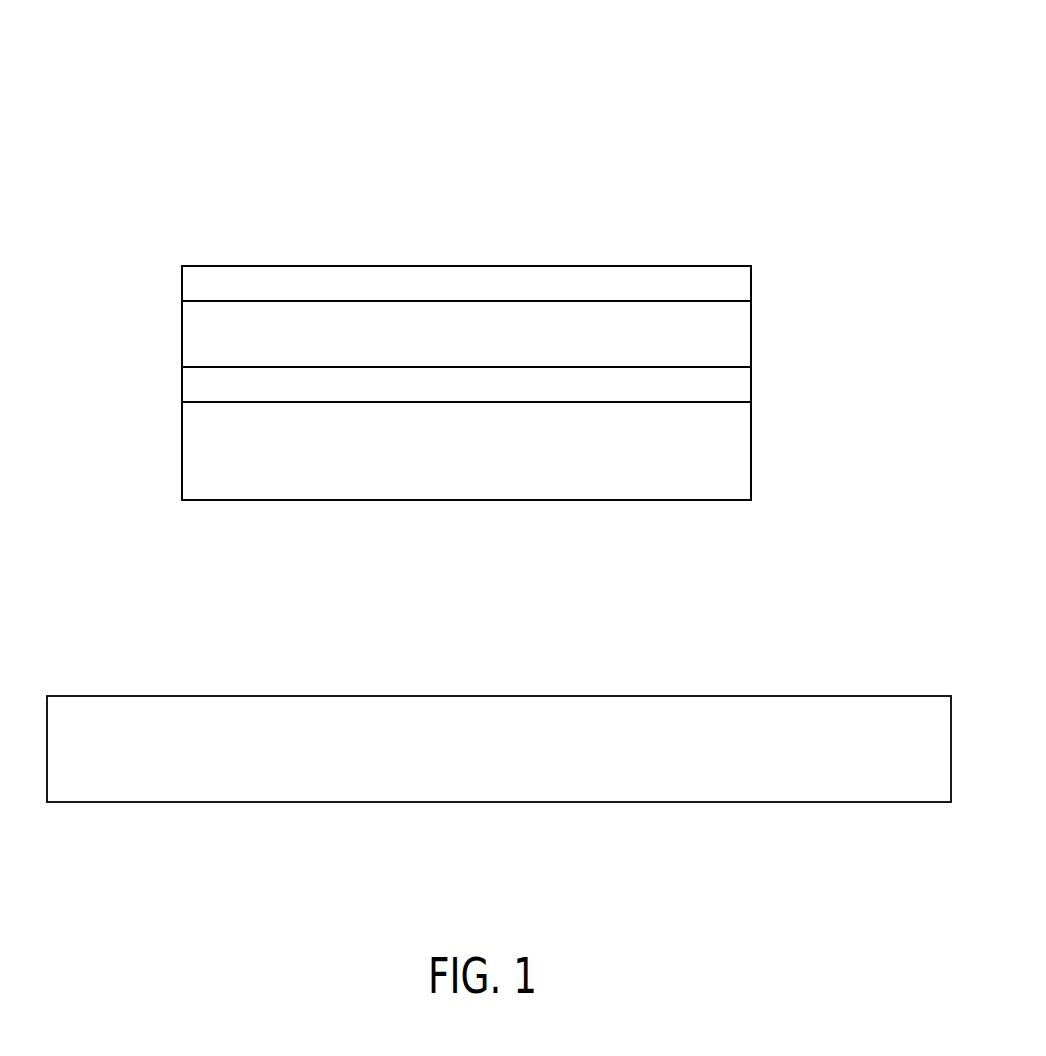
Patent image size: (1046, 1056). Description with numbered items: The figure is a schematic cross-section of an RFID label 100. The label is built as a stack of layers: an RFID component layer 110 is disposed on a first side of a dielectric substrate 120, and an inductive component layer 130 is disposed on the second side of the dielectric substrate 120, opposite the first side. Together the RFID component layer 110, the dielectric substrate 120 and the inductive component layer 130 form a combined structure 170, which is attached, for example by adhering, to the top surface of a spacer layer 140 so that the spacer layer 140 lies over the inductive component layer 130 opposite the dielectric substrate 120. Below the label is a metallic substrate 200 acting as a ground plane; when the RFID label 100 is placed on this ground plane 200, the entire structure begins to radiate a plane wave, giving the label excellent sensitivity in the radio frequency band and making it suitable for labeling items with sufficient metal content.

The RFID label 100 is at (422, 95).
The RFID component layer 110 is at (290, 275).
The dielectric substrate 120 is at (188, 338).
The inductive component layer 130 is at (742, 385).
The spacer layer 140 is at (742, 452).
The combined structure 170 is at (148, 437).
The metallic substrate 200 is at (210, 802).